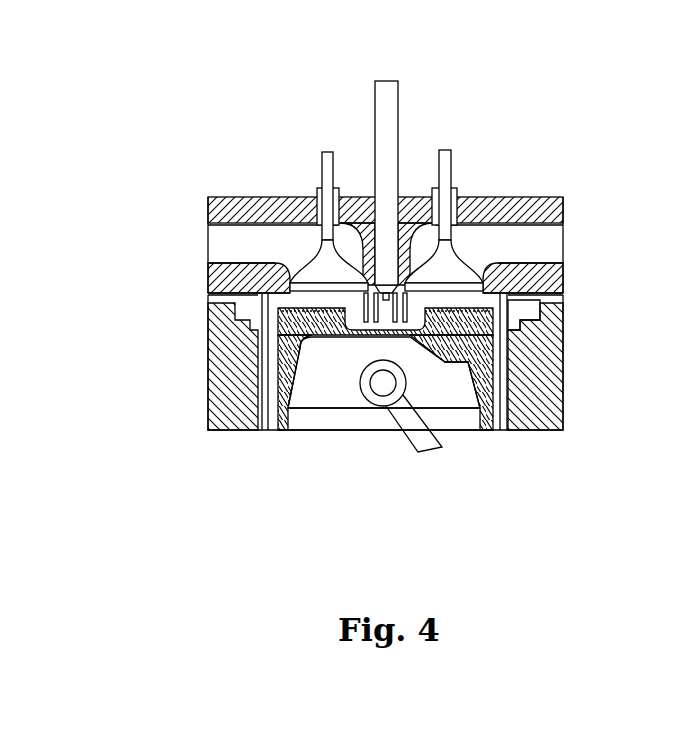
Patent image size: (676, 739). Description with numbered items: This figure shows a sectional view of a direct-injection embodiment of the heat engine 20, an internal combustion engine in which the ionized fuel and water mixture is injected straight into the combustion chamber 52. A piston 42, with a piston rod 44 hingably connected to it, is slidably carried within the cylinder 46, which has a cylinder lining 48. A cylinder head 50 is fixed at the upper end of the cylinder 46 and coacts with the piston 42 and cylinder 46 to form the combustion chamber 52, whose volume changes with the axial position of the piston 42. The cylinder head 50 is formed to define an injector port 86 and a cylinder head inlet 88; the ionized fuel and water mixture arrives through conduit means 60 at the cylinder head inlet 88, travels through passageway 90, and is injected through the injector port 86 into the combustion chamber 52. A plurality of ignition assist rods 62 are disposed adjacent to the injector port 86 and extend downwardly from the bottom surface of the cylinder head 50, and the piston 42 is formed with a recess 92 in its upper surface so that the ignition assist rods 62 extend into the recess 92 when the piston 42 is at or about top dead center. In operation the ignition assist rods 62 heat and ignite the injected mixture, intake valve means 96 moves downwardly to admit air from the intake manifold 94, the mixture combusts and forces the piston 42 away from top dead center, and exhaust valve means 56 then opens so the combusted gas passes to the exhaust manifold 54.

The heat engine 20 is at (208, 366).
The piston 42 is at (384, 372).
The piston rod 44 is at (408, 425).
The cylinder 46 is at (222, 345).
The cylinder lining 48 is at (277, 420).
The cylinder head 50 is at (532, 195).
The combustion chamber 52 is at (305, 305).
The exhaust manifold 54 is at (499, 244).
The exhaust valve means 56 is at (452, 175).
The conduit means 60 is at (375, 113).
The ignition assist rods 62 is at (430, 350).
The injector port 86 is at (475, 281).
The cylinder head inlet 88 is at (400, 193).
The passageway 90 is at (387, 253).
The recess 92 is at (500, 325).
The intake manifold 94 is at (273, 244).
The intake valve means 96 is at (322, 177).